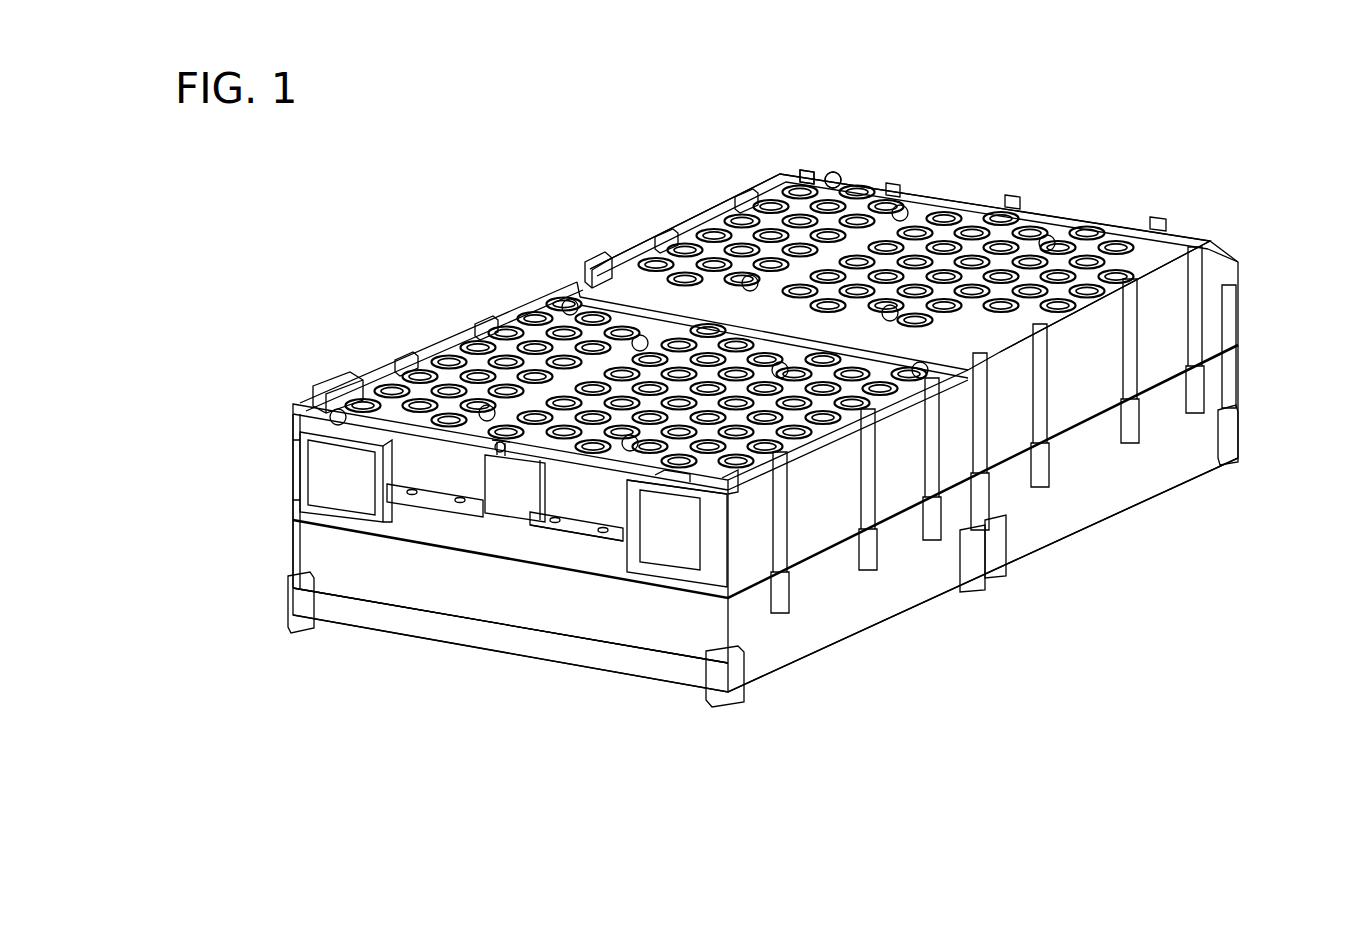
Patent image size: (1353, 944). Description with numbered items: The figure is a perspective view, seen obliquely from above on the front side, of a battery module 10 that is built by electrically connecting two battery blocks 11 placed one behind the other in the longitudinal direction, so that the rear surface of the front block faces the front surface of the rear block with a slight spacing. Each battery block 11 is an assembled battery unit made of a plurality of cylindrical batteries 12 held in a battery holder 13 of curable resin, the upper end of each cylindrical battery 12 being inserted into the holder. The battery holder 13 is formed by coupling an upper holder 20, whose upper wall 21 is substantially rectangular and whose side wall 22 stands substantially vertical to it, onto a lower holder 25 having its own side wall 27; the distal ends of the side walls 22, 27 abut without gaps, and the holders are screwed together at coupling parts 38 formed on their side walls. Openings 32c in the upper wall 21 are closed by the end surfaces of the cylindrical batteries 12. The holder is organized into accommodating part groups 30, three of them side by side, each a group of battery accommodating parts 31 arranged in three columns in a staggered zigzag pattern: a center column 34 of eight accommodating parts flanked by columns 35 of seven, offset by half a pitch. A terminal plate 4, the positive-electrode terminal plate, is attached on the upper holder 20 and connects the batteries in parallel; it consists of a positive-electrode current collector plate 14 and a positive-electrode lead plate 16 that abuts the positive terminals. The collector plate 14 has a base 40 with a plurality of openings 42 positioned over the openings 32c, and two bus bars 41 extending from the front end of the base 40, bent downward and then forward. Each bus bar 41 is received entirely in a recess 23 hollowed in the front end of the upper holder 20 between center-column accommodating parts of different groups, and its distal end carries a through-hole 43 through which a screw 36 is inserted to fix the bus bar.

The battery module 10 is at (1215, 80).
The battery block 11 is at (930, 598).
The cylindrical battery 12 is at (1083, 240).
The battery holder 13 is at (212, 452).
The positive-electrode current collector plate 14 is at (452, 352).
The positive-electrode lead plate 16 is at (718, 226).
The terminal plate 4 is at (768, 120).
The upper holder 20 is at (312, 460).
The upper wall 21 is at (390, 350).
The side wall 22 is at (312, 455).
The recess 23 is at (397, 470).
The lower holder 25 is at (300, 545).
The side wall 27 is at (327, 573).
The accommodating part group 30 is at (927, 95).
The battery accommodating part 31 is at (950, 212).
The opening 32c is at (338, 386).
The center column 34 is at (858, 186).
The column 35 is at (807, 187).
The screw 36 is at (597, 268).
The coupling part 38 is at (866, 520).
The base 40 is at (676, 478).
The bus bar 41 is at (447, 467).
The opening 42 is at (737, 480).
The through-hole 43 is at (600, 530).